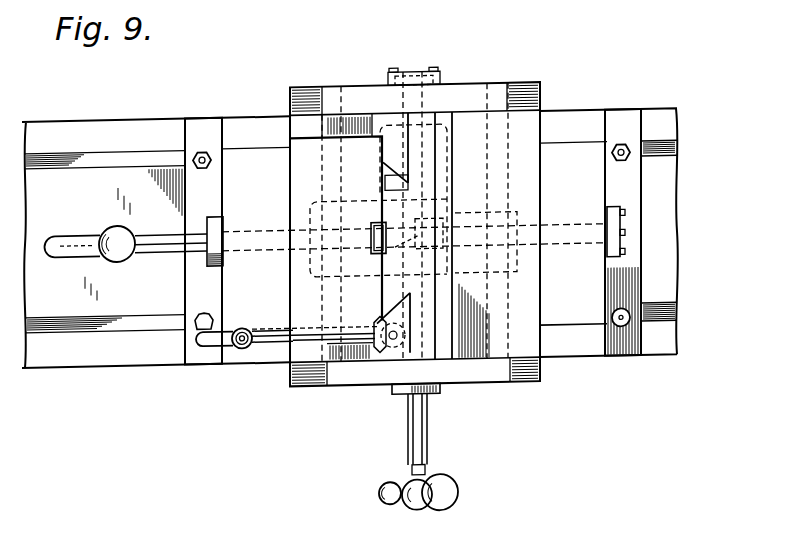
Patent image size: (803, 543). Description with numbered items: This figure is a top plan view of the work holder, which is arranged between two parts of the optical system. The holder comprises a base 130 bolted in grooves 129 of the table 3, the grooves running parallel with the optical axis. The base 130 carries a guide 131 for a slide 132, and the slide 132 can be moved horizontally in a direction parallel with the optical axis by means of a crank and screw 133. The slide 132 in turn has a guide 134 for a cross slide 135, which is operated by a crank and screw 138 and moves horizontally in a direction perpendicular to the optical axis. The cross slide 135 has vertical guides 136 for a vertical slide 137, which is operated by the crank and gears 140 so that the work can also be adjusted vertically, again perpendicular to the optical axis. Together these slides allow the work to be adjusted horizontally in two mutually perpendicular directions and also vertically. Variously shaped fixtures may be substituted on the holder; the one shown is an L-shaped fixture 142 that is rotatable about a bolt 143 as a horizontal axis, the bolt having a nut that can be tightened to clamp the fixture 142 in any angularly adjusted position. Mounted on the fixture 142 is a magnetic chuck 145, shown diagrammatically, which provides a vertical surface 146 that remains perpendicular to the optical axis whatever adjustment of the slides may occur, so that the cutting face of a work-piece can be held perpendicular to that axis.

The table 3 is at (128, 352).
The grooves 129 is at (122, 162).
The base 130 is at (597, 347).
The guide 131 is at (243, 152).
The slide 132 is at (533, 385).
The crank and screw 133 is at (174, 247).
The guide 134 is at (333, 384).
The cross slide 135 is at (307, 183).
The vertical guides 136 is at (397, 157).
The vertical slide 137 is at (396, 213).
The crank and screw 138 is at (427, 450).
The crank and gears 140 is at (298, 340).
The fixture 142 is at (445, 118).
The bolt 143 is at (412, 247).
The magnetic chuck 145 is at (468, 125).
The vertical surface 146 is at (517, 272).